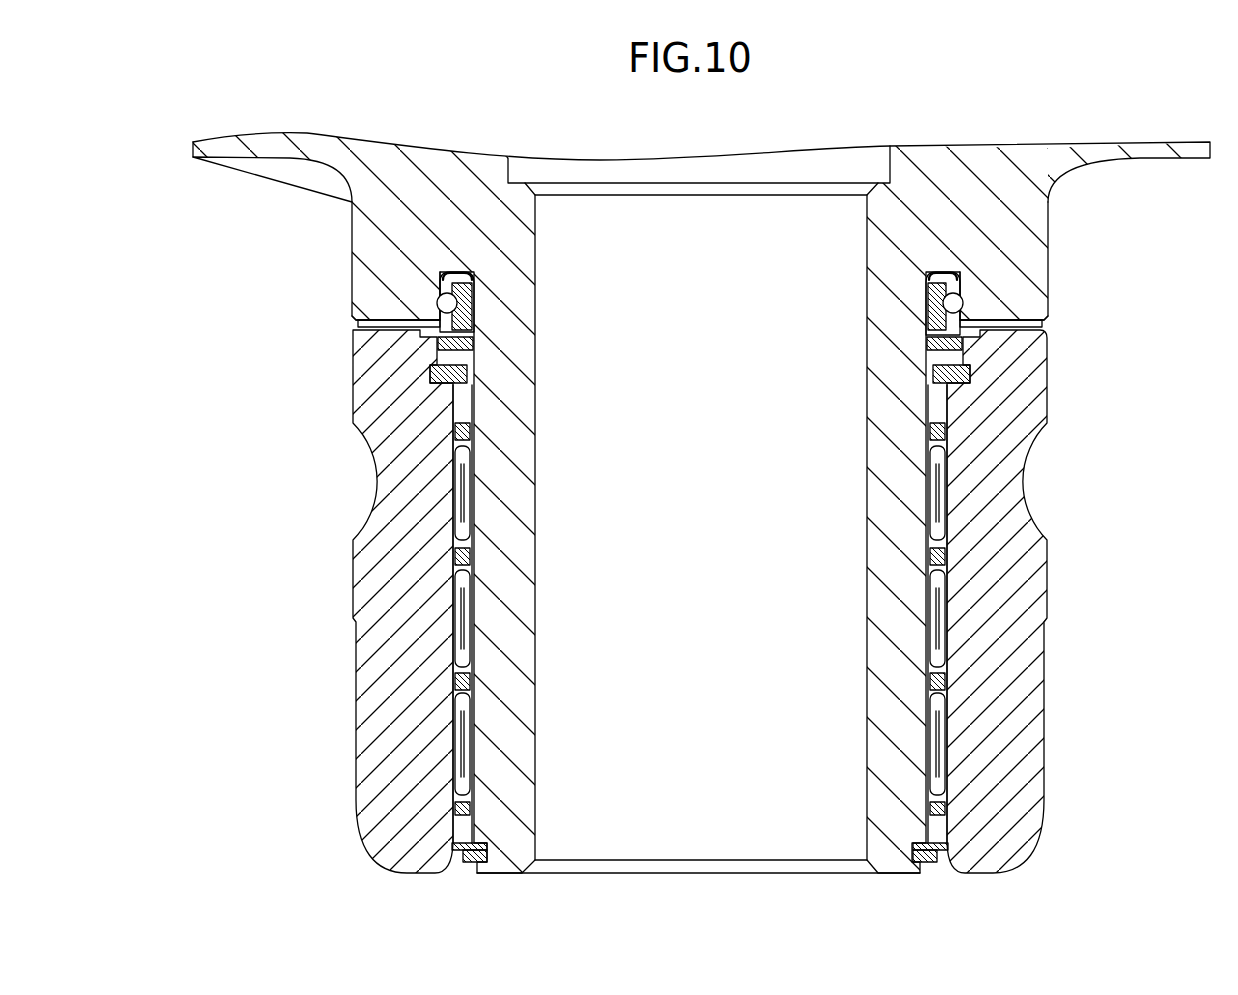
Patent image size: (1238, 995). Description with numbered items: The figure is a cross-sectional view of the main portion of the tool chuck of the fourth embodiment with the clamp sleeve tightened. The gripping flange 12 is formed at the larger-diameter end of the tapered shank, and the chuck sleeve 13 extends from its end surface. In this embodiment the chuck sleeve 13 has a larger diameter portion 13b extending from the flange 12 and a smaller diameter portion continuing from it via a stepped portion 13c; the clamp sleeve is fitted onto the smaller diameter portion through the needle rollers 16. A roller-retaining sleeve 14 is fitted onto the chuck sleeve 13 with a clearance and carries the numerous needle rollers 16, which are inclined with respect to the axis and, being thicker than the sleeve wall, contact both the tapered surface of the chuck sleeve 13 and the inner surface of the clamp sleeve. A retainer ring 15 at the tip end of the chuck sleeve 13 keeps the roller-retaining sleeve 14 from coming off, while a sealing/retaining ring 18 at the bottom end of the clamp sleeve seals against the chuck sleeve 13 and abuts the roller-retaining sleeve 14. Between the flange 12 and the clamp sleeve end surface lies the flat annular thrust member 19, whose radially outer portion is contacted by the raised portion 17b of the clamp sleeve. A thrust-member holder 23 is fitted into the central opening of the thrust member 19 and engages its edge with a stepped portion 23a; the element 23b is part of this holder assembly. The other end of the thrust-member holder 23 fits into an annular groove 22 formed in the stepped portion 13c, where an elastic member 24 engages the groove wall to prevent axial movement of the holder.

The gripping flange 12 is at (1140, 160).
The chuck sleeve 13 is at (895, 498).
The larger diameter portion 13b is at (1013, 290).
The stepped portion 13c is at (362, 323).
The roller-retaining sleeve 14 is at (948, 553).
The retainer ring 15 is at (937, 840).
The needle rollers 16 is at (937, 617).
The raised portion 17b is at (373, 347).
The sealing/retaining ring 18 is at (1047, 396).
The thrust member 19 is at (955, 338).
The annular groove 22 is at (953, 292).
The thrust-member holder 23 is at (719, 248).
The stepped portion 23a is at (928, 343).
The outer ring 23b is at (928, 283).
The elastic member 24 is at (455, 270).